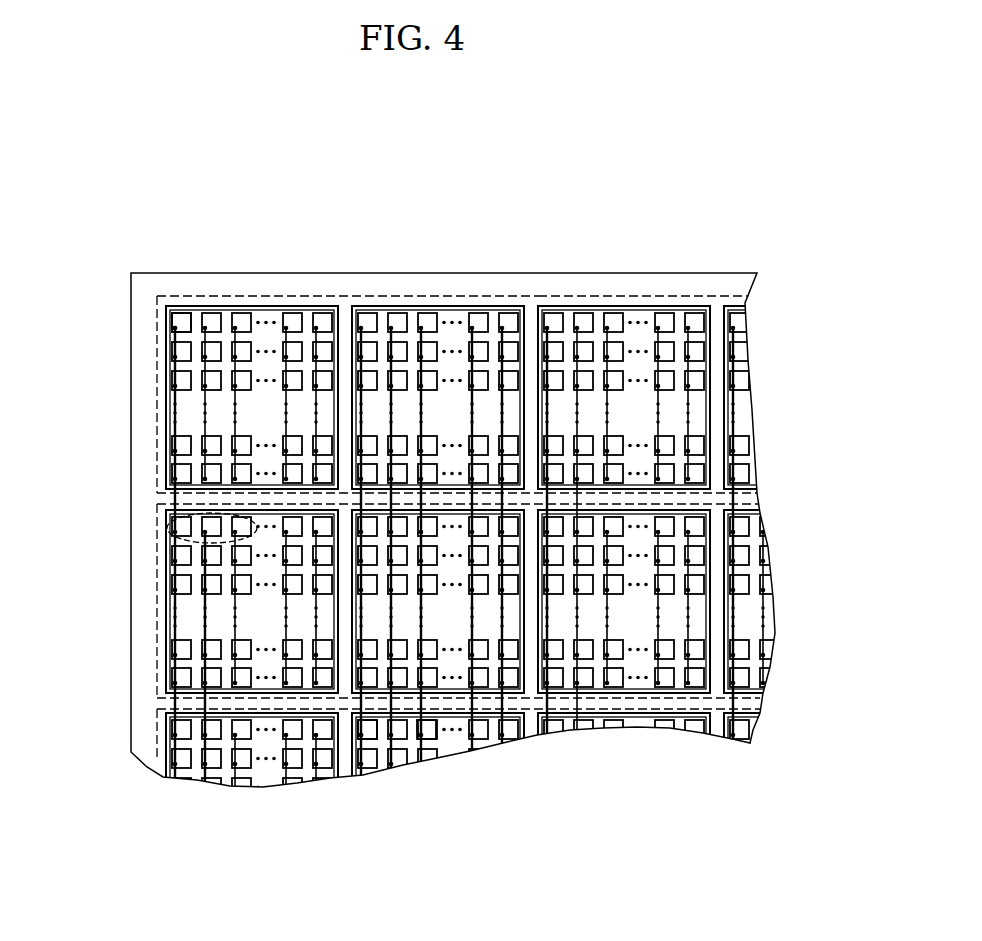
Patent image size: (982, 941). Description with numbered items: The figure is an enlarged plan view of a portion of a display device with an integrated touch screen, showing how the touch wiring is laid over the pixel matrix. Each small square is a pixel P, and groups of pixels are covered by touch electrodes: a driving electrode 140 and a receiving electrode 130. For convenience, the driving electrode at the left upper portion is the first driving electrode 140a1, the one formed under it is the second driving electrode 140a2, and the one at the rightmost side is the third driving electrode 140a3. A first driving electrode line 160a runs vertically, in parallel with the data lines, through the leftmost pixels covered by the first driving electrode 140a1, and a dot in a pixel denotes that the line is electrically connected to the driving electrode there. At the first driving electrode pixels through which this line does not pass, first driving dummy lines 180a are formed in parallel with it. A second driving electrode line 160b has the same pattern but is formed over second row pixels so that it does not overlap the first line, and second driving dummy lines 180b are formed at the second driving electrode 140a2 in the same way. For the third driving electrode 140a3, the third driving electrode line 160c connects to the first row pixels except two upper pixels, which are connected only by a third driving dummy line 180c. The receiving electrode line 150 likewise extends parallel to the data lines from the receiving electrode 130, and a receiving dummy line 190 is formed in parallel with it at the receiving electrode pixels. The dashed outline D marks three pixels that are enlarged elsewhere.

The pixel P is at (185, 312).
The portion D is at (167, 523).
The receiving electrode 130 is at (465, 305).
The driving electrode 140 is at (390, 296).
The first driving electrode 140a1 is at (163, 395).
The second driving electrode 140a2 is at (162, 683).
The third driving electrode 140a3 is at (650, 302).
The receiving electrode line 150 is at (372, 727).
The first driving electrode line 160a is at (173, 502).
The second driving electrode line 160b is at (203, 700).
The third driving electrode line 160c is at (547, 403).
The first driving dummy line 180a is at (207, 428).
The second driving dummy line 180b is at (237, 625).
The third driving dummy line 180c is at (567, 317).
The receiving dummy line 190 is at (432, 727).